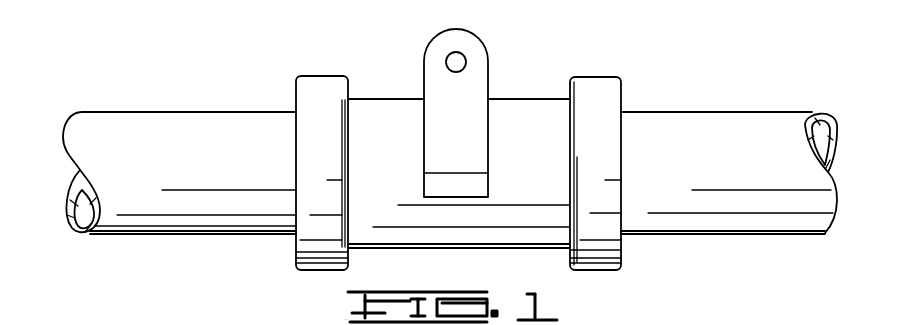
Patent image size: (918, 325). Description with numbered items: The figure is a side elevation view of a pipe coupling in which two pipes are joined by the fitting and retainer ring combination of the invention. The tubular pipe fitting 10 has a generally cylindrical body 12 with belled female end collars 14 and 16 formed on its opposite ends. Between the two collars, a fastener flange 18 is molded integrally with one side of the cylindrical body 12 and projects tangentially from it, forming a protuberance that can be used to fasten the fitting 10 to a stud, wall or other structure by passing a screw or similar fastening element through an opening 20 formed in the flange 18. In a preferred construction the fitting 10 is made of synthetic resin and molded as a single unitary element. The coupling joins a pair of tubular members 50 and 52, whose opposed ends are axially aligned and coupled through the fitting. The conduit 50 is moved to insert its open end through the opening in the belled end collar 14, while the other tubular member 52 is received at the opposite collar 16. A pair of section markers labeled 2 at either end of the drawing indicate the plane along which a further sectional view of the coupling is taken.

The tubular pipe fitting 10 is at (518, 88).
The cylindrical body 12 is at (394, 151).
The belled female end collar 14 is at (330, 156).
The belled female end collar 16 is at (607, 150).
The fastener flange 18 is at (463, 144).
The opening 20 is at (463, 56).
The tubular member 50 is at (212, 155).
The tubular member 52 is at (728, 153).
The section line 2- 2 is at (449, 213).